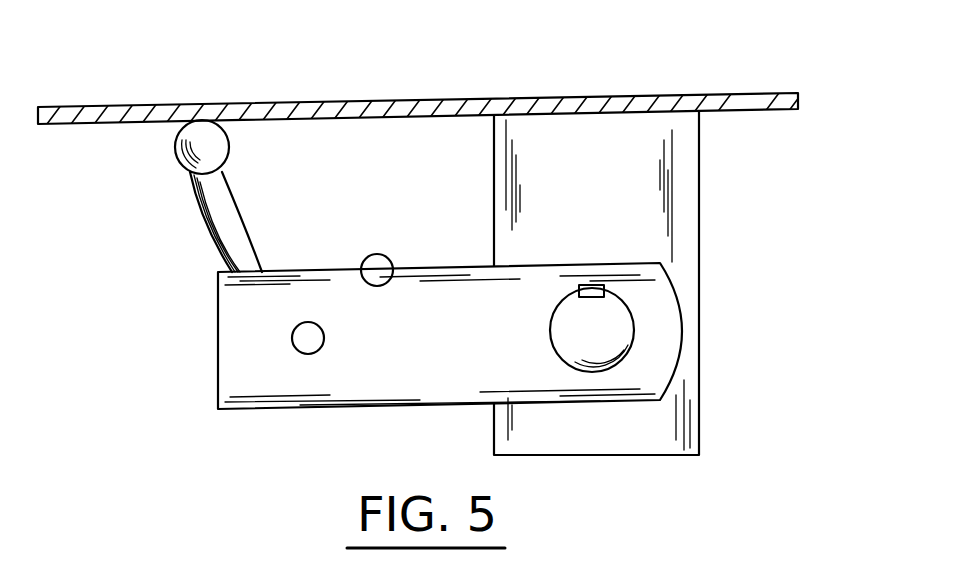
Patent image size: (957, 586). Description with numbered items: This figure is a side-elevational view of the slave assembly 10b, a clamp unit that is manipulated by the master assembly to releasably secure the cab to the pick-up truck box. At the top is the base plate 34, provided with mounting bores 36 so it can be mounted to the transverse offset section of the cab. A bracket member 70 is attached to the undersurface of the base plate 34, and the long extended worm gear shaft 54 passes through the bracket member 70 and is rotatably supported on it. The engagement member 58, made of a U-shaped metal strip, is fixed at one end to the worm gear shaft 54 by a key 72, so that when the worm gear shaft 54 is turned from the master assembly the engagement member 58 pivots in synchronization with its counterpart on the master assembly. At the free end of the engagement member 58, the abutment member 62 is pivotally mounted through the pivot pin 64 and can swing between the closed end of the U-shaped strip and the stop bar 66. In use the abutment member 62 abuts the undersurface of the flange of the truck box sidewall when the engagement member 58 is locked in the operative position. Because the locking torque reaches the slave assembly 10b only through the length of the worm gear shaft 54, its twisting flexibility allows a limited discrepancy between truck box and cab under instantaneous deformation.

The slave assembly 10b is at (765, 300).
The base plate 34 is at (400, 108).
The mounting bores 36 is at (102, 110).
The worm gear shaft 54 is at (605, 350).
The engagement member 58 is at (325, 390).
The abutment member 62 is at (188, 176).
The pivot pin 64 is at (302, 340).
The stop bar 66 is at (373, 264).
The bracket member 70 is at (690, 197).
The key 72 is at (590, 284).